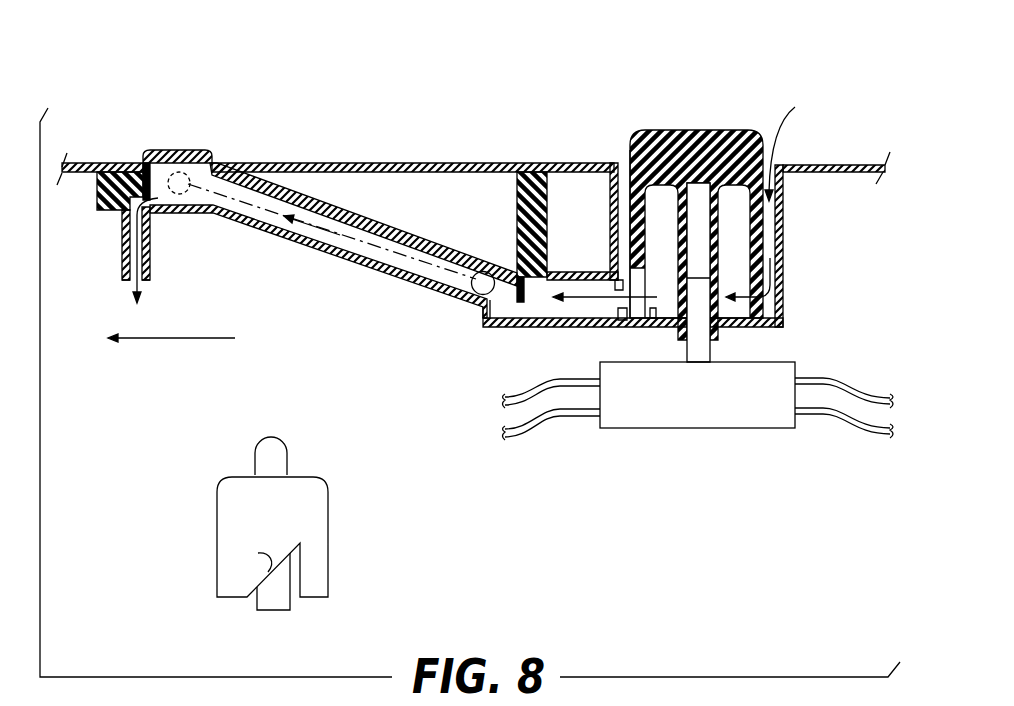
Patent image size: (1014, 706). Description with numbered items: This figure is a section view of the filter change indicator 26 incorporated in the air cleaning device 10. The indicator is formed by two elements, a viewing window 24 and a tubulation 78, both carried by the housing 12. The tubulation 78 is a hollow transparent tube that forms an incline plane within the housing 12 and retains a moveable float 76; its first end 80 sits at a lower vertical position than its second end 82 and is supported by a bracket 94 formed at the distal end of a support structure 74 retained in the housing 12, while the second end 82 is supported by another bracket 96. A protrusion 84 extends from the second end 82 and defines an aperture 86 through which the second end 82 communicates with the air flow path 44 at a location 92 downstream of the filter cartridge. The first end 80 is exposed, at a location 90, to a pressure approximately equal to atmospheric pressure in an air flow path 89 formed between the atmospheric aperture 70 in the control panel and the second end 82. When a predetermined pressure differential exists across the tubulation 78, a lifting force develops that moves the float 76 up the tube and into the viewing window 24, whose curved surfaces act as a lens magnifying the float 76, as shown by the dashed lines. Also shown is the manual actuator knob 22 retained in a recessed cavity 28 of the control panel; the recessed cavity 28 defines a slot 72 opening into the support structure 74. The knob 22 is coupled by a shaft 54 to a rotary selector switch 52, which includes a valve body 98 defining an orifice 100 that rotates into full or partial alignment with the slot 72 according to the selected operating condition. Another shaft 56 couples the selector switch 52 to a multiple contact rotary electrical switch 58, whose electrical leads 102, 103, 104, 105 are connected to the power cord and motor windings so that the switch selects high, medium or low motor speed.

The air cleaning device 10 is at (705, 70).
The housing 12 is at (845, 163).
The manual actuator knob 22 is at (656, 130).
The viewing window 24 is at (200, 152).
The filter change indicator 26 is at (177, 125).
The recessed cavity 28 is at (770, 230).
The air flow path 44 is at (171, 349).
The rotary selector switch 52 is at (306, 505).
The shaft 54 is at (672, 206).
The shaft 56 is at (713, 353).
The multiple contact rotary electrical switch 58 is at (668, 430).
The atmospheric aperture 70 is at (780, 165).
The slot 72 is at (597, 307).
The support structure 74 is at (516, 190).
The float 76 is at (482, 295).
The tubulation 78 is at (306, 250).
The first end 80 is at (512, 270).
The second end 82 is at (181, 213).
The protrusion 84 is at (120, 245).
The aperture 86 is at (152, 282).
The air flow path 89 is at (464, 202).
The location 90 is at (537, 310).
The location 92 is at (128, 284).
The bracket 94 is at (549, 273).
The bracket 96 is at (97, 190).
The valve body 98 is at (330, 570).
The orifice 100 is at (655, 310).
The electrical lead 102 is at (825, 378).
The electrical lead 103 is at (558, 381).
The electrical lead 104 is at (552, 423).
The electrical lead 105 is at (822, 413).